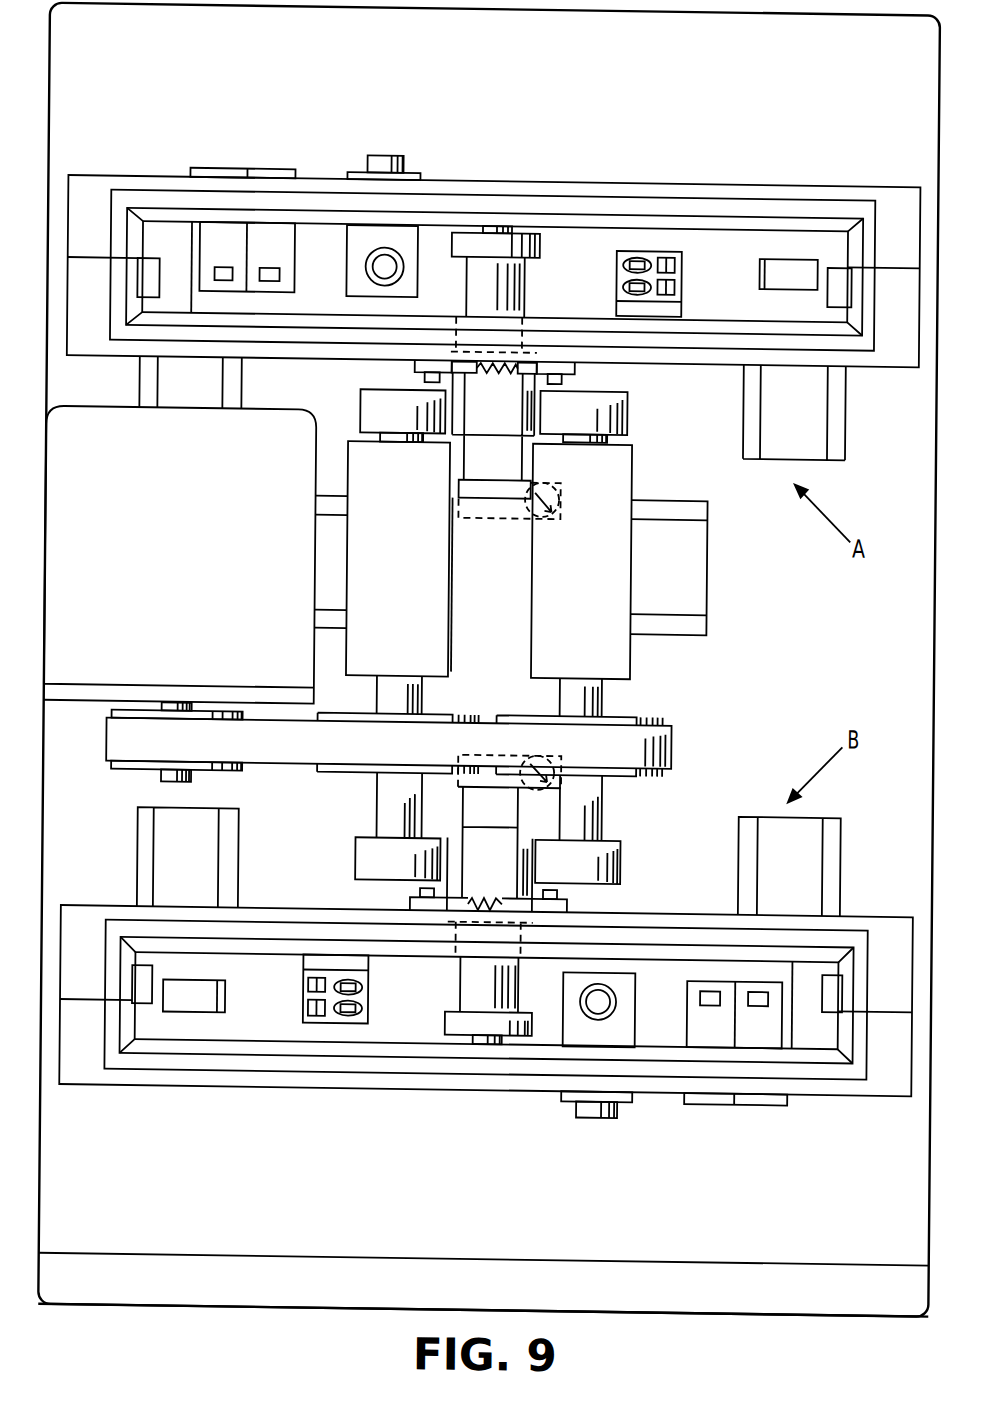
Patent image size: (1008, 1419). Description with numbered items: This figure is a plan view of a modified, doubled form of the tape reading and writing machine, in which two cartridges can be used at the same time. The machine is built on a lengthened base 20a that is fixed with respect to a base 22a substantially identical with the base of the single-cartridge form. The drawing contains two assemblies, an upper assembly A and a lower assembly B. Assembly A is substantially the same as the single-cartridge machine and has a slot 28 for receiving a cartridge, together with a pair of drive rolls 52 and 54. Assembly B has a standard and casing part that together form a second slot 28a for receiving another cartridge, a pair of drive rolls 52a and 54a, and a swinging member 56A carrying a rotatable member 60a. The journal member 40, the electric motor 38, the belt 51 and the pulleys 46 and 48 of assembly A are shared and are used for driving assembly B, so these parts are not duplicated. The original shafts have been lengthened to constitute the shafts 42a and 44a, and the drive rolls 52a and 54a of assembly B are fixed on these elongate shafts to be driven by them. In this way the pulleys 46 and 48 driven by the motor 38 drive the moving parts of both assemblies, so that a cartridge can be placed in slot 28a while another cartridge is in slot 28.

The base 20a is at (280, 106).
The base 22a is at (483, 1311).
The slot 28 is at (492, 405).
The slot 28a is at (486, 979).
The electric motor 38 is at (196, 575).
The journal member 40 is at (602, 576).
The shaft 42a is at (431, 696).
The shaft 44a is at (614, 698).
The pulley 46 is at (373, 805).
The pulley 48 is at (603, 808).
The belt 51 is at (389, 759).
The drive roll 52 is at (374, 411).
The drive roll 54 is at (615, 413).
The drive roll 52a is at (366, 866).
The drive roll 54a is at (612, 870).
The swinging member 56A is at (489, 833).
The rotatable member 60a is at (463, 983).